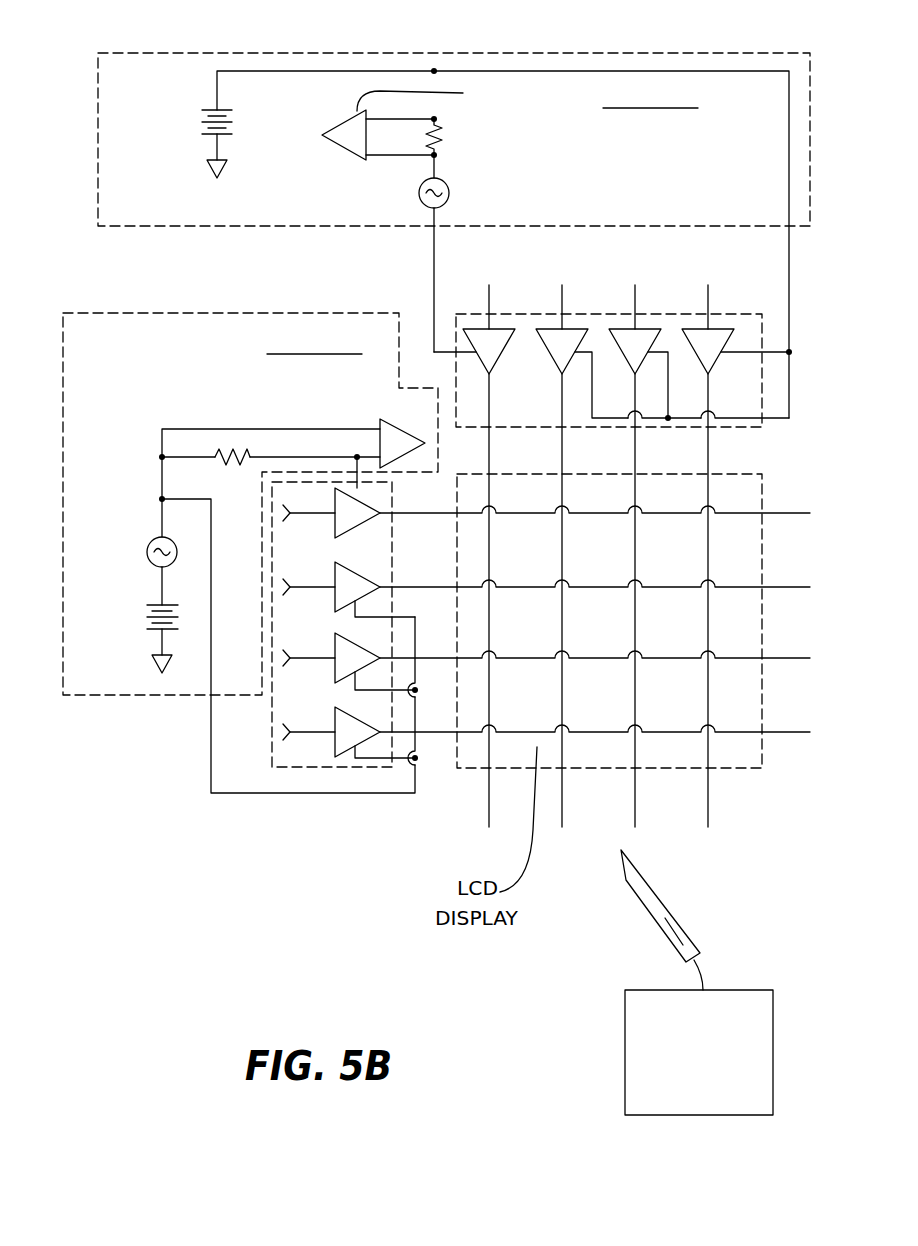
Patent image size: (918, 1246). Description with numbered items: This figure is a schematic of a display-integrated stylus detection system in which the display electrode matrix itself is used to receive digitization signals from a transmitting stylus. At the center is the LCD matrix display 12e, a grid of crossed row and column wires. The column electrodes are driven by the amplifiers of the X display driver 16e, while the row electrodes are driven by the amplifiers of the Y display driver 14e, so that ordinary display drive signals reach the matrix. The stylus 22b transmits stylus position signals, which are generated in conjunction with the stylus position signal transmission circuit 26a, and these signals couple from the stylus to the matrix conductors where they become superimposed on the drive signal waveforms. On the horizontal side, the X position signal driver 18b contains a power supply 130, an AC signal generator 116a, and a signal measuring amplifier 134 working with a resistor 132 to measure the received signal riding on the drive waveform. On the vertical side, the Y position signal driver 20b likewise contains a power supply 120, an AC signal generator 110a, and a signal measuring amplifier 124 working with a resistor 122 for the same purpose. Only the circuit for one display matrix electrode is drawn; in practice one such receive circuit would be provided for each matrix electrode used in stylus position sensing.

The X position signal driver 18b is at (654, 53).
The power supply 130 is at (262, 123).
The signal measuring amplifier 134 is at (352, 161).
The resistor 132 is at (427, 144).
The signal generator 116a is at (447, 199).
The X display driver 16e is at (748, 312).
The Y position signal driver 20b is at (135, 310).
The signal measuring amplifier 124 is at (400, 422).
The resistor 122 is at (219, 470).
The signal generator 110a is at (147, 552).
The power supply 120 is at (148, 632).
The Y display driver 14e is at (272, 722).
The matrix display 12e is at (759, 504).
The stylus 22b is at (650, 873).
The stylus position signal transmission circuit 26a is at (625, 1041).